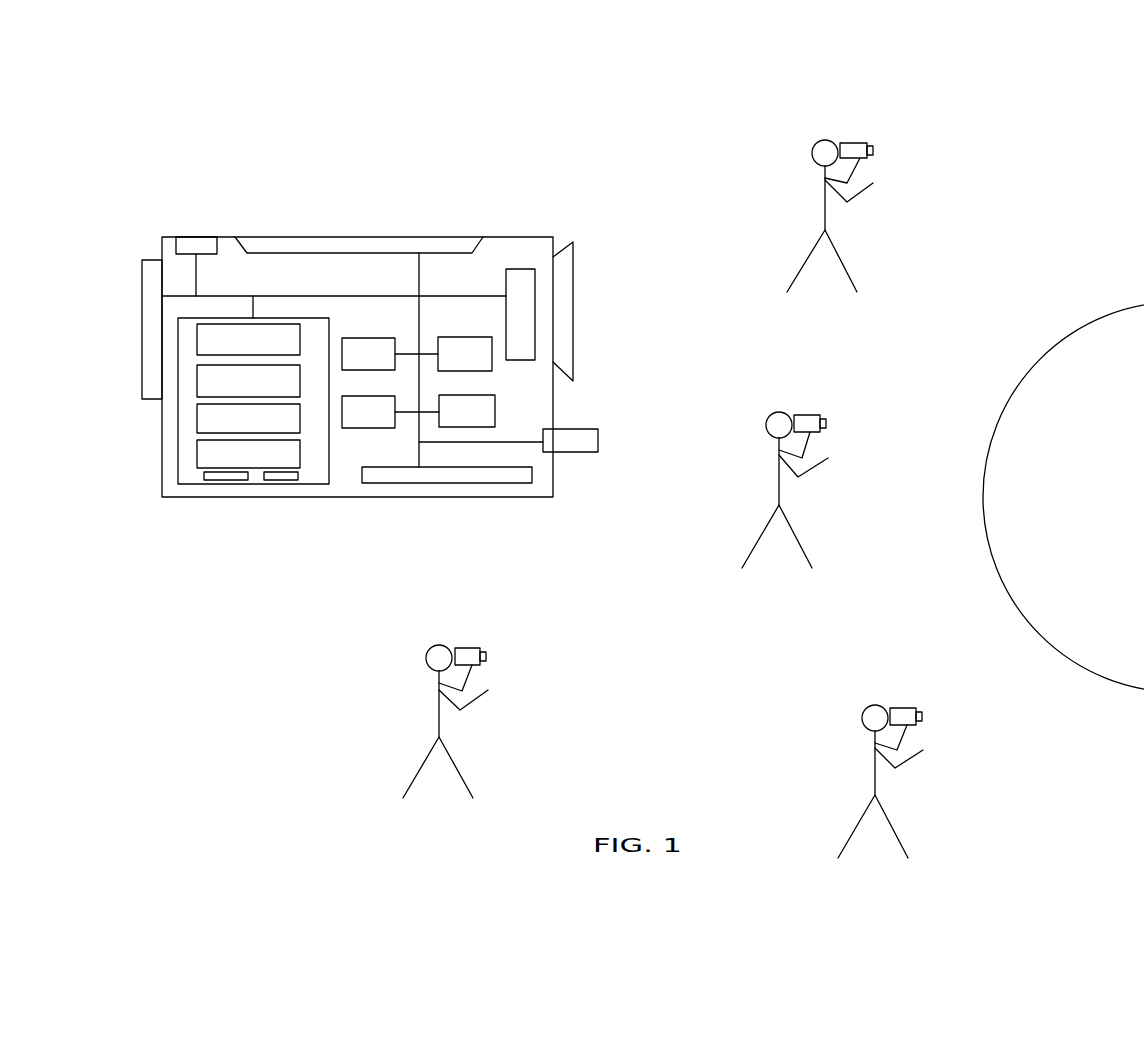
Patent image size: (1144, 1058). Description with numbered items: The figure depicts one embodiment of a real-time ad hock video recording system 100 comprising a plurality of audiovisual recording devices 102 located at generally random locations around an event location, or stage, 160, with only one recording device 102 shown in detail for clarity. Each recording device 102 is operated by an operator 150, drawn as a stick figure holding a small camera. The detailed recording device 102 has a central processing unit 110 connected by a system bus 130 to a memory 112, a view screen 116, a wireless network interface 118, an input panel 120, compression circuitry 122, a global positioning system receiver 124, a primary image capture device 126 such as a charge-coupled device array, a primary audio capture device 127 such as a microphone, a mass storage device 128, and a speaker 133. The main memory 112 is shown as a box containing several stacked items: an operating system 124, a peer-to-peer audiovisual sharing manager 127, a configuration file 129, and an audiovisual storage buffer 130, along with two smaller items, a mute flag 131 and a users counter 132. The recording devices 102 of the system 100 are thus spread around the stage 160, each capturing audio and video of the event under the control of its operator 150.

The real-time ad hock video recording system 100 is at (375, 329).
The audiovisual recording device 102 is at (900, 708).
The central processing unit 110 is at (368, 354).
The memory 112 is at (190, 452).
The view screen 116 is at (148, 317).
The wireless network interface 118 is at (465, 354).
The input panel 120 is at (337, 243).
The compression circuitry 122 is at (368, 412).
The global positioning system receiver 124 is at (346, 375).
The primary image capture device 126 is at (520, 277).
The primary audio capture device 127 is at (593, 438).
The mass storage device 128 is at (473, 477).
The configuration file 129 is at (248, 418).
The system bus 130 is at (418, 276).
The mute flag 131 is at (230, 480).
The users counter 132 is at (283, 480).
The speaker 133 is at (203, 246).
The operator 150 is at (822, 172).
The event location 160 is at (1063, 497).